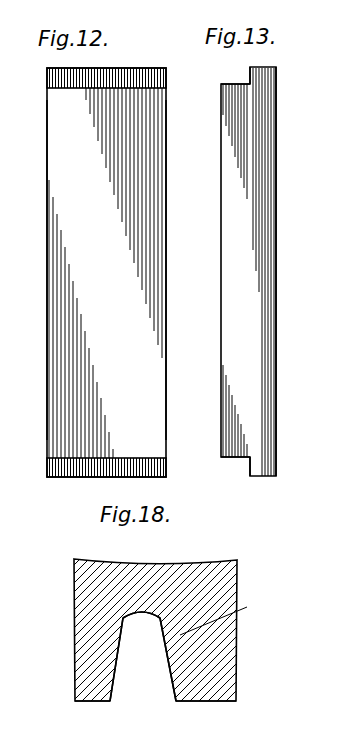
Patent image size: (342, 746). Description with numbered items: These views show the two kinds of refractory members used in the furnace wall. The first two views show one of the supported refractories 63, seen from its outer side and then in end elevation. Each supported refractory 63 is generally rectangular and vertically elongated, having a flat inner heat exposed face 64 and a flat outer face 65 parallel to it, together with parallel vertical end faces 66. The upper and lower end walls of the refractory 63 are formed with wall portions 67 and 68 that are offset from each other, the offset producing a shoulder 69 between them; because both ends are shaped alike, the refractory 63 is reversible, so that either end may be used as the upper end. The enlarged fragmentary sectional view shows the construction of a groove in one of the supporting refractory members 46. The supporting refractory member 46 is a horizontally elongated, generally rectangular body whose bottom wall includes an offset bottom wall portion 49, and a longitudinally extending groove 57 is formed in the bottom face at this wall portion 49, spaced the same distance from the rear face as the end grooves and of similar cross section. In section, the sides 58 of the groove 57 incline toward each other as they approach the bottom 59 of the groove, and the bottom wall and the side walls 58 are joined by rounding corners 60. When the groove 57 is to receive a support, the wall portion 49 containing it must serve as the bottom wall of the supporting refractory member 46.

In FIG. 12, the supported refractory 63 is at (45, 308).
In FIG. 13, the supported refractory 63 is at (223, 278).
In FIG. 12, the inner heat exposed face 64 is at (67, 252).
In FIG. 13, the inner heat exposed face 64 is at (221, 224).
In FIG. 13, the outer face 65 is at (276, 242).
In FIG. 12, the vertical end face 66 is at (47, 170).
In FIG. 13, the wall portion 67 is at (232, 84).
In FIG. 13, the wall portion 68 is at (256, 68).
In FIG. 12, the shoulder 69 is at (138, 72).
In FIG. 13, the shoulder 69 is at (250, 80).
In FIG. 18, the supporting refractory member 46 is at (222, 643).
In FIG. 18, the bottom wall portion 49 is at (207, 702).
In FIG. 18, the longitudinally extending groove 57 is at (130, 664).
In FIG. 18, the side 58 is at (118, 642).
In FIG. 18, the bottom 59 is at (147, 617).
In FIG. 18, the rounding corner 60 is at (210, 562).